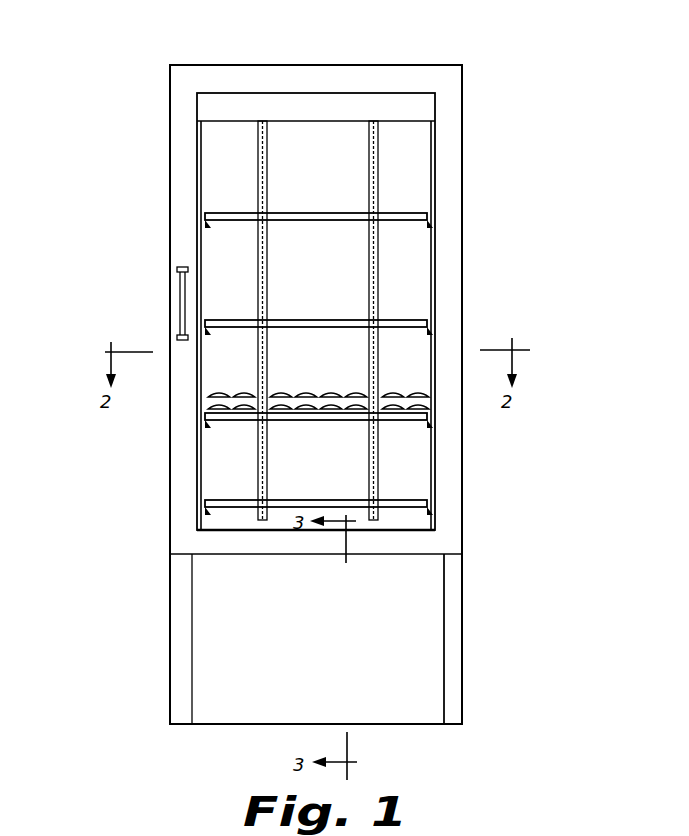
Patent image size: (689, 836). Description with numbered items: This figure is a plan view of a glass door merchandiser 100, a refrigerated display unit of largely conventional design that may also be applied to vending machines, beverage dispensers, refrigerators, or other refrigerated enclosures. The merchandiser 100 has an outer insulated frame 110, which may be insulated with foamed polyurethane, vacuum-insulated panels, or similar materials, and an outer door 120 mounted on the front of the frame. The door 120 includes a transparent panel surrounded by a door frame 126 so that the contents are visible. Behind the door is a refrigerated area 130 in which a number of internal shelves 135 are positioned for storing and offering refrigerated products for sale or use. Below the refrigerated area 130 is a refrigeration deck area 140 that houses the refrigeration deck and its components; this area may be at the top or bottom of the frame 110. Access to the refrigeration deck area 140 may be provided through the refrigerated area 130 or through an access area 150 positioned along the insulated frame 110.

The glass door merchandiser 100 is at (140, 65).
The outer insulated frame 110 is at (470, 167).
The outer door 120 is at (180, 220).
The door frame 126 is at (453, 82).
The refrigerated area 130 is at (347, 270).
The internal shelves 135 is at (290, 213).
The refrigeration deck area 140 is at (335, 648).
The access area 150 is at (423, 618).